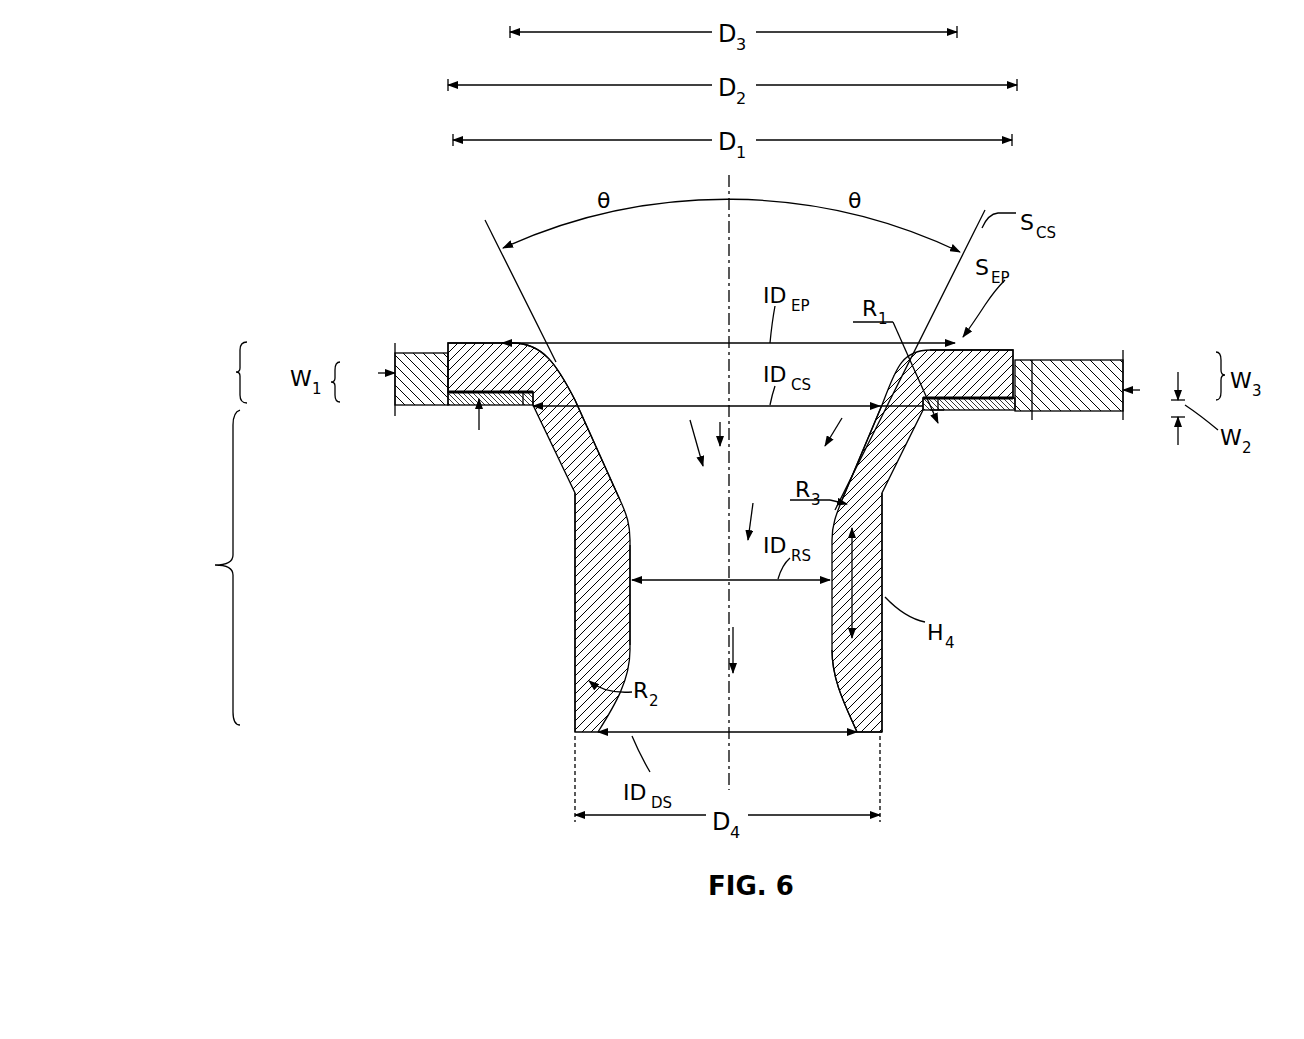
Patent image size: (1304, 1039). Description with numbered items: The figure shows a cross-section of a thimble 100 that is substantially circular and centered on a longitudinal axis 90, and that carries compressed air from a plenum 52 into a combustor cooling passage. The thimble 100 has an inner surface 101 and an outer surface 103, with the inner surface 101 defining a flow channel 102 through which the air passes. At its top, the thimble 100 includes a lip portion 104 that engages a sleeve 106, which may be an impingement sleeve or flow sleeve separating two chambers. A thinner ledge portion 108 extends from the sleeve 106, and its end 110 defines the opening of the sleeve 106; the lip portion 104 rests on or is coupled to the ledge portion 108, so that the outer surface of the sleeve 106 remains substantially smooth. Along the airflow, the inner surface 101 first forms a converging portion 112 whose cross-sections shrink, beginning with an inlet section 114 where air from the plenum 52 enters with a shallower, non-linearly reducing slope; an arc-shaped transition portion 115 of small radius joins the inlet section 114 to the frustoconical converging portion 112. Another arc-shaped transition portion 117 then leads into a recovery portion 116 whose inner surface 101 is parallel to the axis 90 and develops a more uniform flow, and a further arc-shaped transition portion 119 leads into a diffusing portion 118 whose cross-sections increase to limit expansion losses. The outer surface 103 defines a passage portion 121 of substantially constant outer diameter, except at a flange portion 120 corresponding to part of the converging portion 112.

The plenum 52 is at (586, 174).
The longitudinal axis 90 is at (729, 770).
The thimble 100 is at (282, 140).
The inner surface 101 is at (590, 404).
The flow channel 102 is at (710, 534).
The outer surface 103 is at (575, 560).
The lip portion 104 is at (462, 342).
The sleeve 106 is at (395, 356).
The ledge portion 108 is at (465, 395).
The end 110 is at (526, 407).
The converging portion 112 is at (603, 431).
The inlet section 114 is at (561, 353).
The transition portion 115 is at (938, 425).
The recovery portion 116 is at (636, 634).
The transition portion 117 is at (851, 504).
The diffusing portion 118 is at (833, 697).
The transition portion 119 is at (858, 688).
The flange portion 120 is at (217, 372).
The passage portion 121 is at (202, 567).